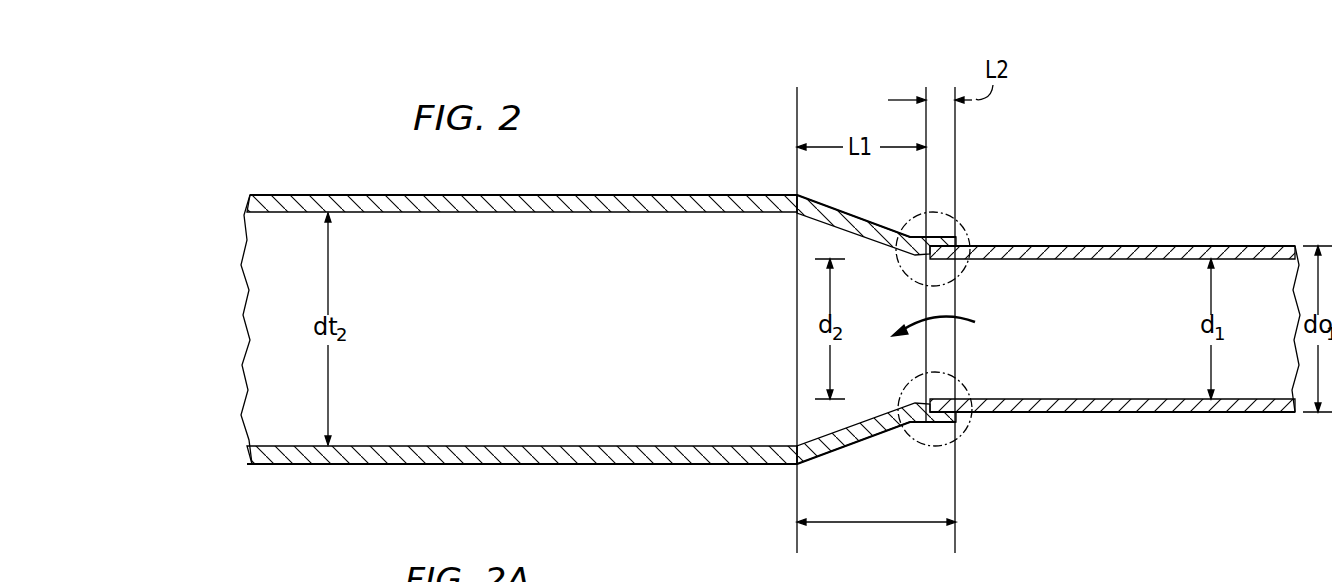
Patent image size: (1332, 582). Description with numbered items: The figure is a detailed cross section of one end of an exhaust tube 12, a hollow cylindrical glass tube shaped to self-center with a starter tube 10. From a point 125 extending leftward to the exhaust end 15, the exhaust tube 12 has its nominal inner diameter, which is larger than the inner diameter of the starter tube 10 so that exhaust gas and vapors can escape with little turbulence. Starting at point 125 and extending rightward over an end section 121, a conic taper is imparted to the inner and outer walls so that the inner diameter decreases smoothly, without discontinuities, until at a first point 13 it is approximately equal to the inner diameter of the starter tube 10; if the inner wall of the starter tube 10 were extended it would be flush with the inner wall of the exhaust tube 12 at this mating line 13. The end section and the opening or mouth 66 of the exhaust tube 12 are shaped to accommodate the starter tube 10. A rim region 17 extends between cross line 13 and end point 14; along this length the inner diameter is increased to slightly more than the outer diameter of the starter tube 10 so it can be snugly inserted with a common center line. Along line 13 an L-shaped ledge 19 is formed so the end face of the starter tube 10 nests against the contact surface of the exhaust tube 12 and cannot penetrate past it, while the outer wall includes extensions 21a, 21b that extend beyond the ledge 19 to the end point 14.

The starter tube 10 is at (1153, 413).
The exhaust tube 12 is at (490, 465).
The first point 13 is at (926, 122).
The end point 14 is at (955, 168).
The exhaust end 15 is at (247, 305).
The rim region 17 is at (968, 228).
The L-shaped ledge 19 is at (918, 240).
The extension 21a is at (933, 424).
The extension 21b is at (956, 237).
The opening (mouth) 66 is at (951, 324).
The end section 121 is at (878, 523).
The point 125 is at (797, 113).